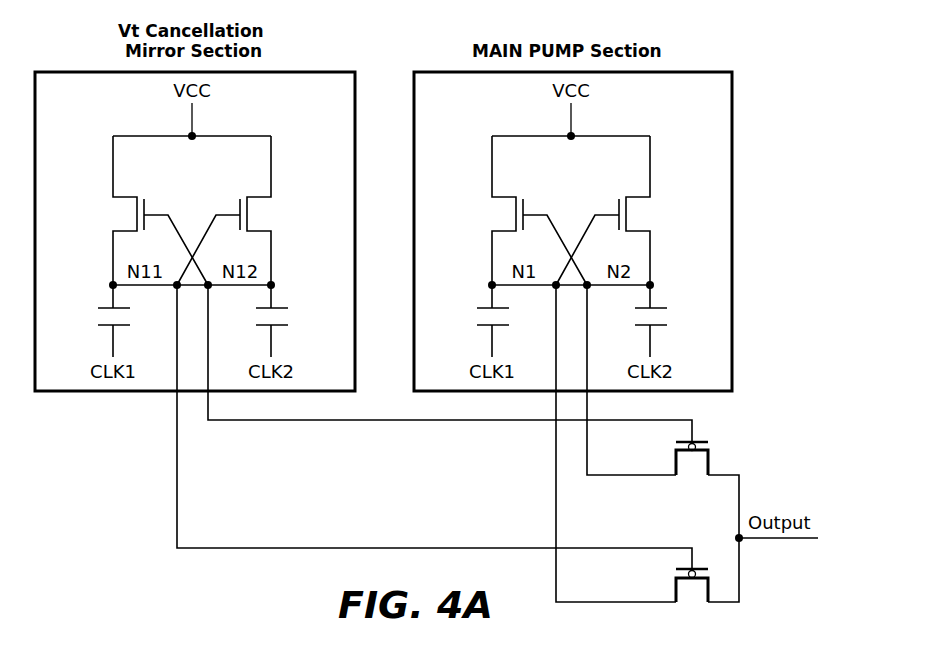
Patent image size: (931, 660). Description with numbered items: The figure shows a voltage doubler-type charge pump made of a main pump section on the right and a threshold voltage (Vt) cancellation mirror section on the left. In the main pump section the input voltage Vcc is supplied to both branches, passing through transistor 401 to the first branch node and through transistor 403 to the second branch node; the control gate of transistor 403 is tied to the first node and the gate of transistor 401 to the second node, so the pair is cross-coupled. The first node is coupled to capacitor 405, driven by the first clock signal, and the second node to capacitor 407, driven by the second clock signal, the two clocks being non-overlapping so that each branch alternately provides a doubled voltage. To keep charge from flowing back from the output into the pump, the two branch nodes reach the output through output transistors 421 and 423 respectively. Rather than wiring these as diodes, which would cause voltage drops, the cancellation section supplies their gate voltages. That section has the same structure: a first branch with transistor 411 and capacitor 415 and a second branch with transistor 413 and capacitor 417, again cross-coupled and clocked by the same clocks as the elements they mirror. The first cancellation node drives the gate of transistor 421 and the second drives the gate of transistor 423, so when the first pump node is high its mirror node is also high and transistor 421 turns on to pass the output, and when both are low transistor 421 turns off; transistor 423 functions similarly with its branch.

The transistor 401 is at (539, 210).
The transistor 403 is at (603, 210).
The capacitor 405 is at (466, 316).
The capacitor 407 is at (677, 316).
The transistor 411 is at (123, 197).
The transistor 413 is at (262, 197).
The capacitor 415 is at (111, 300).
The capacitor 417 is at (273, 300).
The output transistor 421 is at (709, 588).
The output transistor 423 is at (710, 462).